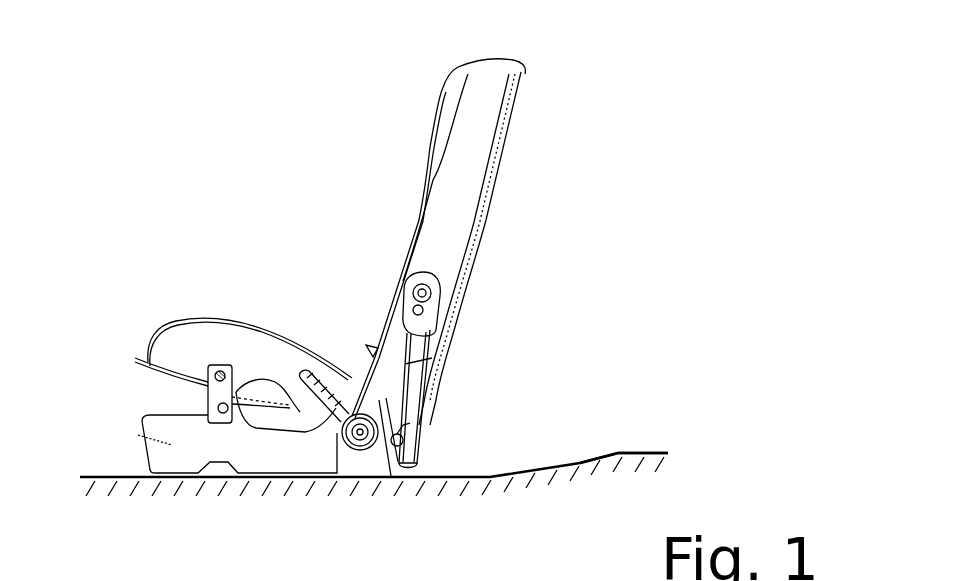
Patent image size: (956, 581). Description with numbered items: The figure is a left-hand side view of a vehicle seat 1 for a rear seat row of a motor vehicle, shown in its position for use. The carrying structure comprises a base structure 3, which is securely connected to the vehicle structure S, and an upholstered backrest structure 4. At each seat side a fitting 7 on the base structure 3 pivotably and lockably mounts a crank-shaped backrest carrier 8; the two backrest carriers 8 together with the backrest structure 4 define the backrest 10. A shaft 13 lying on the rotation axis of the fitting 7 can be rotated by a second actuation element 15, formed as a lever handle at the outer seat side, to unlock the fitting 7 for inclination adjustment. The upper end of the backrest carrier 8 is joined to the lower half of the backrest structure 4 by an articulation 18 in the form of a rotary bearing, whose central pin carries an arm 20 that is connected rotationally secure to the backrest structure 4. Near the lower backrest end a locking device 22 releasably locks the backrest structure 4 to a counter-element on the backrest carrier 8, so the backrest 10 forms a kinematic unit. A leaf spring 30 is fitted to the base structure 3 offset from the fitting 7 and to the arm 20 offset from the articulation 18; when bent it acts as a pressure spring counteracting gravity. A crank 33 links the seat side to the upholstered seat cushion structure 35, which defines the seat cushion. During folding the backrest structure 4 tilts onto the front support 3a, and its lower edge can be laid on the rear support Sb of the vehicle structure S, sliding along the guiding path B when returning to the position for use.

The vehicle seat 1 is at (297, 140).
The base structure 3 is at (138, 435).
The front support 3a is at (295, 402).
The backrest structure 4 is at (495, 168).
The fitting 7 is at (379, 451).
The backrest carrier 8 is at (440, 307).
The backrest 10 is at (373, 357).
The shaft 13 is at (348, 442).
The second actuation element 15 is at (320, 374).
The articulation 18 is at (424, 294).
The arm 20 is at (403, 281).
The locking device 22 is at (428, 427).
The leaf spring 30 is at (417, 362).
The crank 33 is at (208, 395).
The seat cushion structure 35 is at (290, 405).
The guiding path B is at (620, 452).
The vehicle structure S is at (493, 534).
The rear support Sb is at (653, 450).